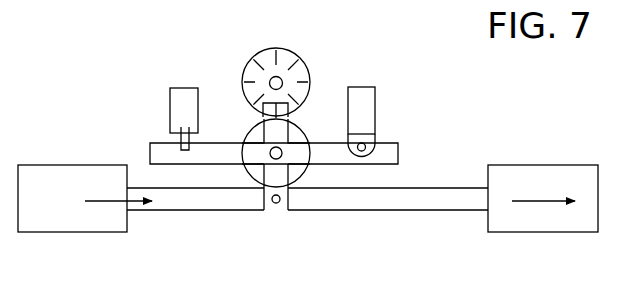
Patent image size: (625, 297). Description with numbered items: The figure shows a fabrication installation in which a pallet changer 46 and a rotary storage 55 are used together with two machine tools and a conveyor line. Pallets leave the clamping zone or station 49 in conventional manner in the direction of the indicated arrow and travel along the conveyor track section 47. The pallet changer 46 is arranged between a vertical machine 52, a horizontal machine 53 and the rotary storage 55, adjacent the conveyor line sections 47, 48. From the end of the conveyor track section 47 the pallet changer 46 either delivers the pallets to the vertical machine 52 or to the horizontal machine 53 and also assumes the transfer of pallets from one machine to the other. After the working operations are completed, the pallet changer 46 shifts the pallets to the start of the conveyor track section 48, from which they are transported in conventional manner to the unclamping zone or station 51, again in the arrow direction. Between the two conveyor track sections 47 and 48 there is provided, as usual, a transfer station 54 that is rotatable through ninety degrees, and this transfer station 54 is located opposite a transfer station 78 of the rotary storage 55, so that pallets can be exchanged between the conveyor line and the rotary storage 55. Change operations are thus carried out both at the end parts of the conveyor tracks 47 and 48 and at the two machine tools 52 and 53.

The pallet changer 46 is at (296, 171).
The conveyor track section 47 is at (190, 203).
The conveyor track section 48 is at (373, 213).
The clamping station 49 is at (73, 218).
The unclamping station 51 is at (533, 220).
The vertical machine 52 is at (363, 96).
The horizontal machine 53 is at (183, 97).
The transfer station 54 is at (279, 213).
The rotary storage 55 is at (267, 57).
The transfer station 78 is at (262, 107).